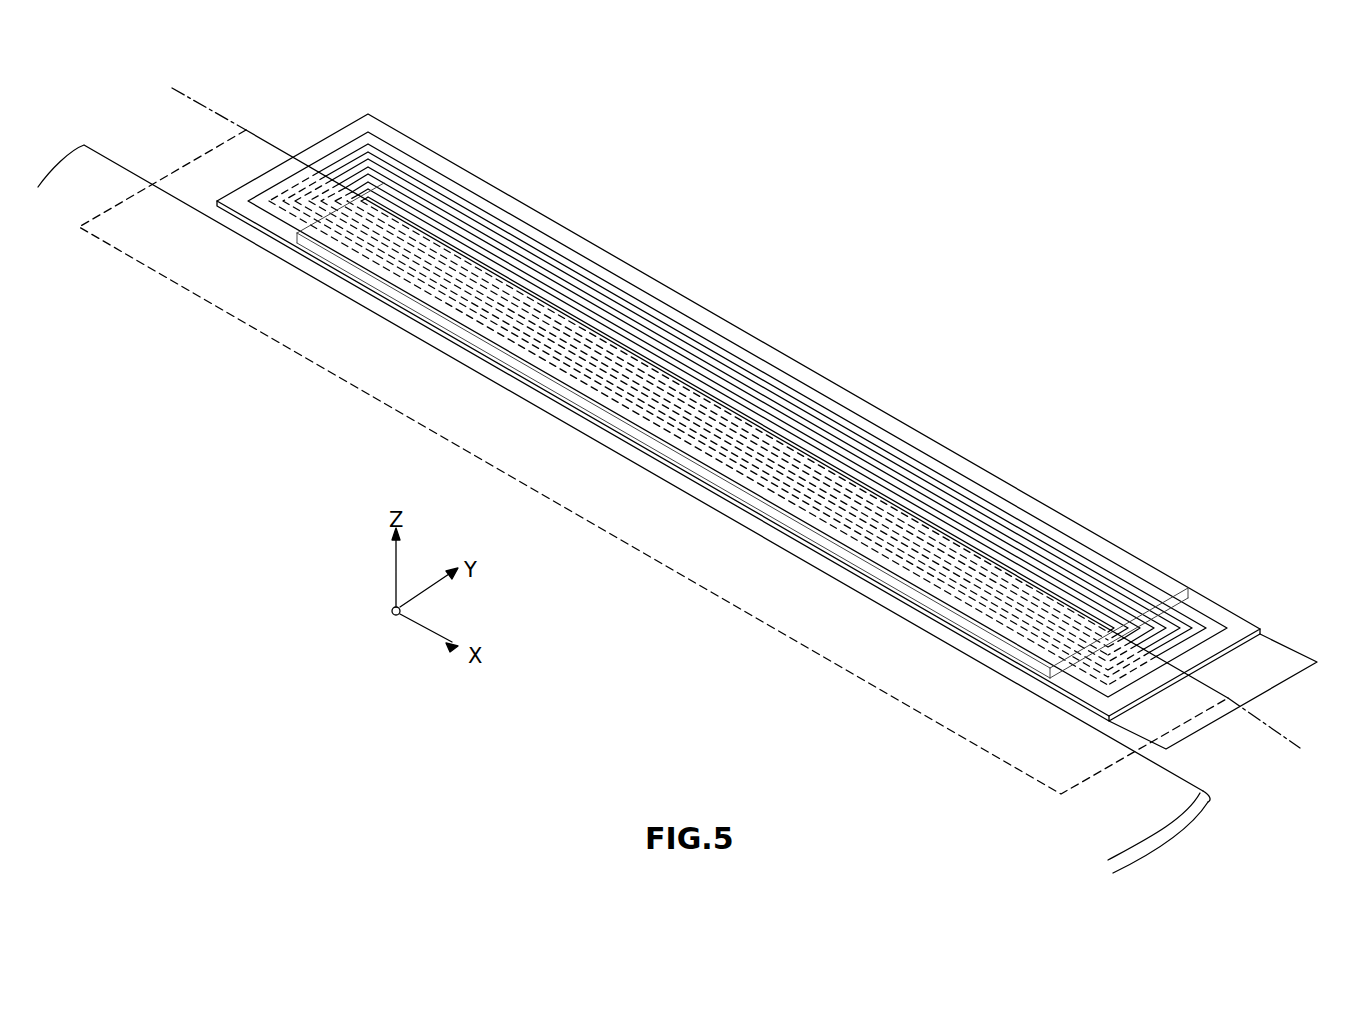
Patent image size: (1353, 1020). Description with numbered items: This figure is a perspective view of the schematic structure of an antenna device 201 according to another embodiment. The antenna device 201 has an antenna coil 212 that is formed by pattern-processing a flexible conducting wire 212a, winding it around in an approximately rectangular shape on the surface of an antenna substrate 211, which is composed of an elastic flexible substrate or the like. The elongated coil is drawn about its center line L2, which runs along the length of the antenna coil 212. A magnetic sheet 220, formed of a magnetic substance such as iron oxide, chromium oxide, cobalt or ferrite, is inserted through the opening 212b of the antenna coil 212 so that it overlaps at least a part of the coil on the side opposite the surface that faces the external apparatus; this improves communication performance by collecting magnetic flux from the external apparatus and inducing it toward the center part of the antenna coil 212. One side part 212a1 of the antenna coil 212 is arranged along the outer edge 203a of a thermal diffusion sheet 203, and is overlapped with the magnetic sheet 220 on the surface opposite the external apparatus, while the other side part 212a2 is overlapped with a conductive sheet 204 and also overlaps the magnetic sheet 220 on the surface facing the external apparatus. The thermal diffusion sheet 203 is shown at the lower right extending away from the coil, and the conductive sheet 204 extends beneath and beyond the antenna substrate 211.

The antenna device 201 is at (900, 95).
The antenna substrate 211 is at (1058, 528).
The antenna coil 212 is at (800, 408).
The conducting wire 212a is at (398, 155).
The opening 212b is at (742, 417).
The one side part 212a1 is at (1282, 684).
The other side part 212a2 is at (1205, 728).
The magnetic sheet 220 is at (300, 243).
The conductive sheet 204 is at (192, 182).
The thermal diffusion sheet 203 is at (1208, 833).
The outer edge 203a is at (1205, 795).
The center line L2 is at (1292, 733).